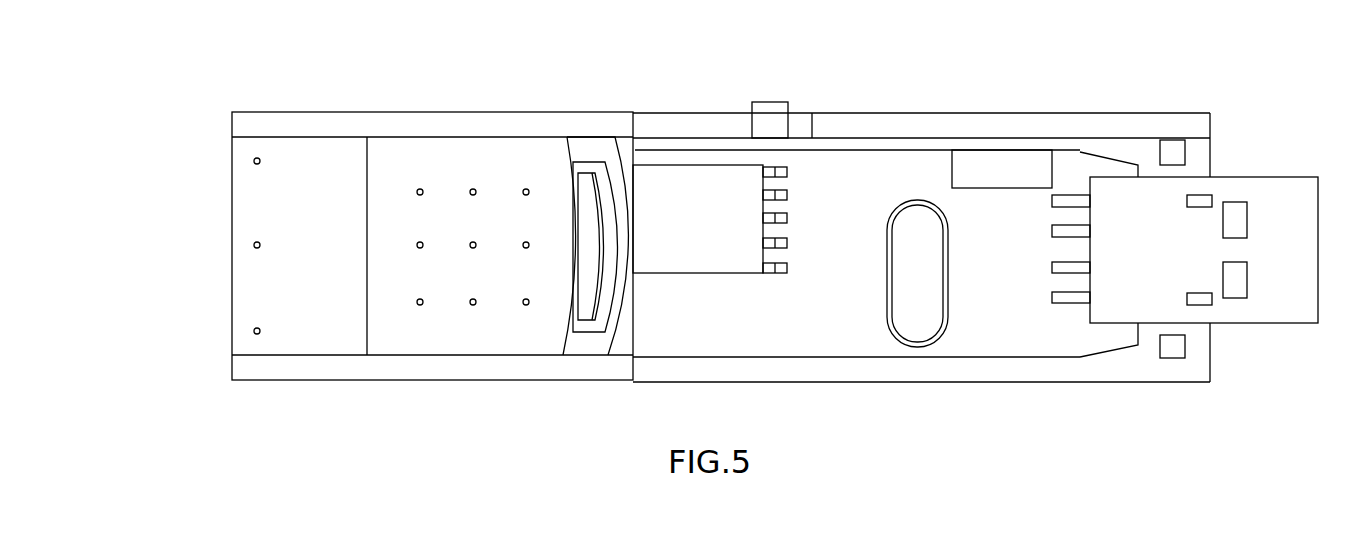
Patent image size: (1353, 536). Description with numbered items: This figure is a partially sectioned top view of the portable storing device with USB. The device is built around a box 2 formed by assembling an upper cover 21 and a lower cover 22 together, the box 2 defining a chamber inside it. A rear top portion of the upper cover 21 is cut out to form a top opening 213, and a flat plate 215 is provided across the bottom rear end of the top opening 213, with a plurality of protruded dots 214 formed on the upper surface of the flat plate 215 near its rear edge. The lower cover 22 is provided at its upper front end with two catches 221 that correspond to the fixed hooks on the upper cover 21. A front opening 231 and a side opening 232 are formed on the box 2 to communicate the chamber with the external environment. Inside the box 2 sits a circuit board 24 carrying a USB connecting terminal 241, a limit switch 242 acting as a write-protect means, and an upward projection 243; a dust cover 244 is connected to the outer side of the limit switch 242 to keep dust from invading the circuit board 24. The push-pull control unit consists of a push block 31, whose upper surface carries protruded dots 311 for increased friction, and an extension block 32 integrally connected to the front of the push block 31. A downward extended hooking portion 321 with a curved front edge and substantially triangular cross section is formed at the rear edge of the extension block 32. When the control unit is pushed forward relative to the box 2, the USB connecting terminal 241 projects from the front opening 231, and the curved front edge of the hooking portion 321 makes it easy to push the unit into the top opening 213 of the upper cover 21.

The box 2 is at (272, 88).
The upper cover 21 is at (433, 125).
The top opening 213 is at (615, 334).
The protruded dots 214 is at (257, 160).
The flat plate 215 is at (260, 210).
The lower cover 22 is at (987, 370).
The catches 221 is at (1168, 150).
The front opening 231 is at (1212, 325).
The side opening 232 is at (670, 125).
The circuit board 24 is at (768, 350).
The USB connecting terminal 241 is at (1223, 187).
The limit switch 242 is at (977, 165).
The upward projection 243 is at (910, 327).
The dust cover 244 is at (788, 148).
The push block 31 is at (528, 150).
The protruded dots 311 is at (420, 302).
The extension block 32 is at (607, 150).
The hooking portion 321 is at (592, 310).